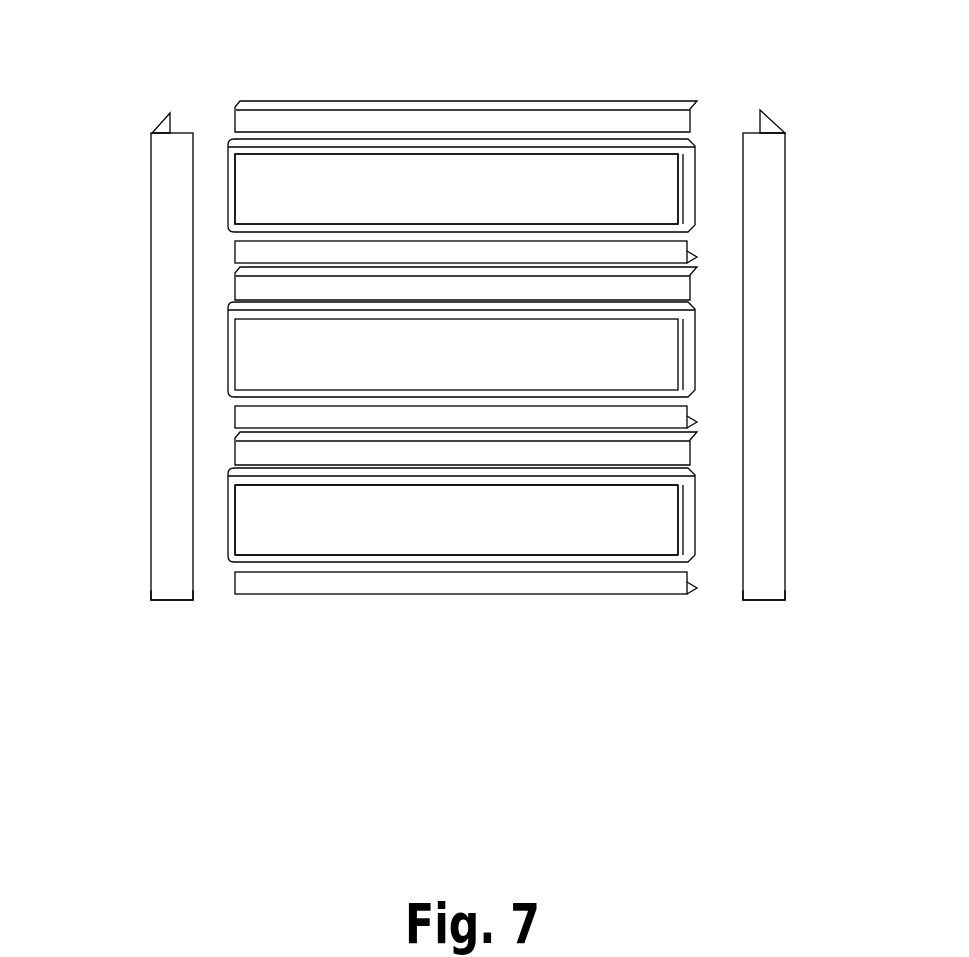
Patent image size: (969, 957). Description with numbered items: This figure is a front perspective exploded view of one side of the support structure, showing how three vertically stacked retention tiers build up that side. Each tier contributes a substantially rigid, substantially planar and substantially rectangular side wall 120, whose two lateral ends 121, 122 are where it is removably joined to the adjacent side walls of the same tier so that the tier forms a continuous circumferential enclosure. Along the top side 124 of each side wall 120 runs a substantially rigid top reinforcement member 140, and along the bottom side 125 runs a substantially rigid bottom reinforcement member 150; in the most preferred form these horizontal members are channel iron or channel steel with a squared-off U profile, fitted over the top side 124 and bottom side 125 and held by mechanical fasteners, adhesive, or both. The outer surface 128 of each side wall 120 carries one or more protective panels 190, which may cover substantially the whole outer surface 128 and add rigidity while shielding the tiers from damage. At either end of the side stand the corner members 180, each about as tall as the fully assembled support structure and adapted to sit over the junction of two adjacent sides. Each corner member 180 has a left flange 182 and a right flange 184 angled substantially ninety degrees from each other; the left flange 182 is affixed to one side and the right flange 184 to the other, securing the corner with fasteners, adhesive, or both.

The side wall 120 is at (230, 145).
The lateral end 121 is at (228, 512).
The lateral end 122 is at (688, 513).
The top side 124 is at (283, 472).
The bottom side 125 is at (677, 563).
The outer surface 128 is at (348, 556).
The top reinforcement member 140 is at (407, 108).
The bottom reinforcement member 150 is at (690, 245).
The corner member 180 is at (150, 252).
The left flange 182 is at (157, 130).
The right flange 184 is at (172, 582).
The protective panel 190 is at (640, 172).